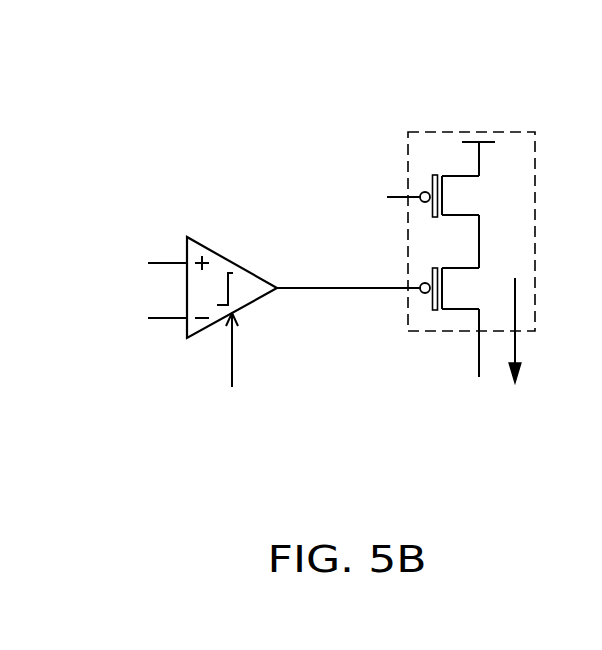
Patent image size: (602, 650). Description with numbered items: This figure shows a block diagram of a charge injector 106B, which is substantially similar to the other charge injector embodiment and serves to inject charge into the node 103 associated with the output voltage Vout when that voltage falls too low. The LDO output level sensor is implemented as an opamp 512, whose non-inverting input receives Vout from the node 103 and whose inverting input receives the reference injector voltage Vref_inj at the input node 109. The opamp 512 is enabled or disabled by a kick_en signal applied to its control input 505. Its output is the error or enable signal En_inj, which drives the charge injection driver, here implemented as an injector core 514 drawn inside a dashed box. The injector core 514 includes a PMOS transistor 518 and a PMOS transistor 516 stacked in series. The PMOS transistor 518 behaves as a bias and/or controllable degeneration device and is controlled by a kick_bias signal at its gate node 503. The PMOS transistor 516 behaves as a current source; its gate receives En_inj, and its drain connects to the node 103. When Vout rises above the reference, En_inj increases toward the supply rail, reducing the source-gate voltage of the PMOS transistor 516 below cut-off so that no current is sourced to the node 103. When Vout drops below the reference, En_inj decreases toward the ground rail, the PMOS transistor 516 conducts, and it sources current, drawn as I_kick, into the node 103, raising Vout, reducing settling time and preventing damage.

The charge injector 106B is at (138, 118).
The opamp 512 is at (212, 245).
The injector core 514 is at (497, 133).
The PMOS transistor 516 is at (475, 292).
The PMOS transistor 518 is at (470, 195).
The node 103 is at (271, 350).
The input node 109 is at (117, 336).
The gate node 503 is at (347, 181).
The control input 505 is at (229, 387).